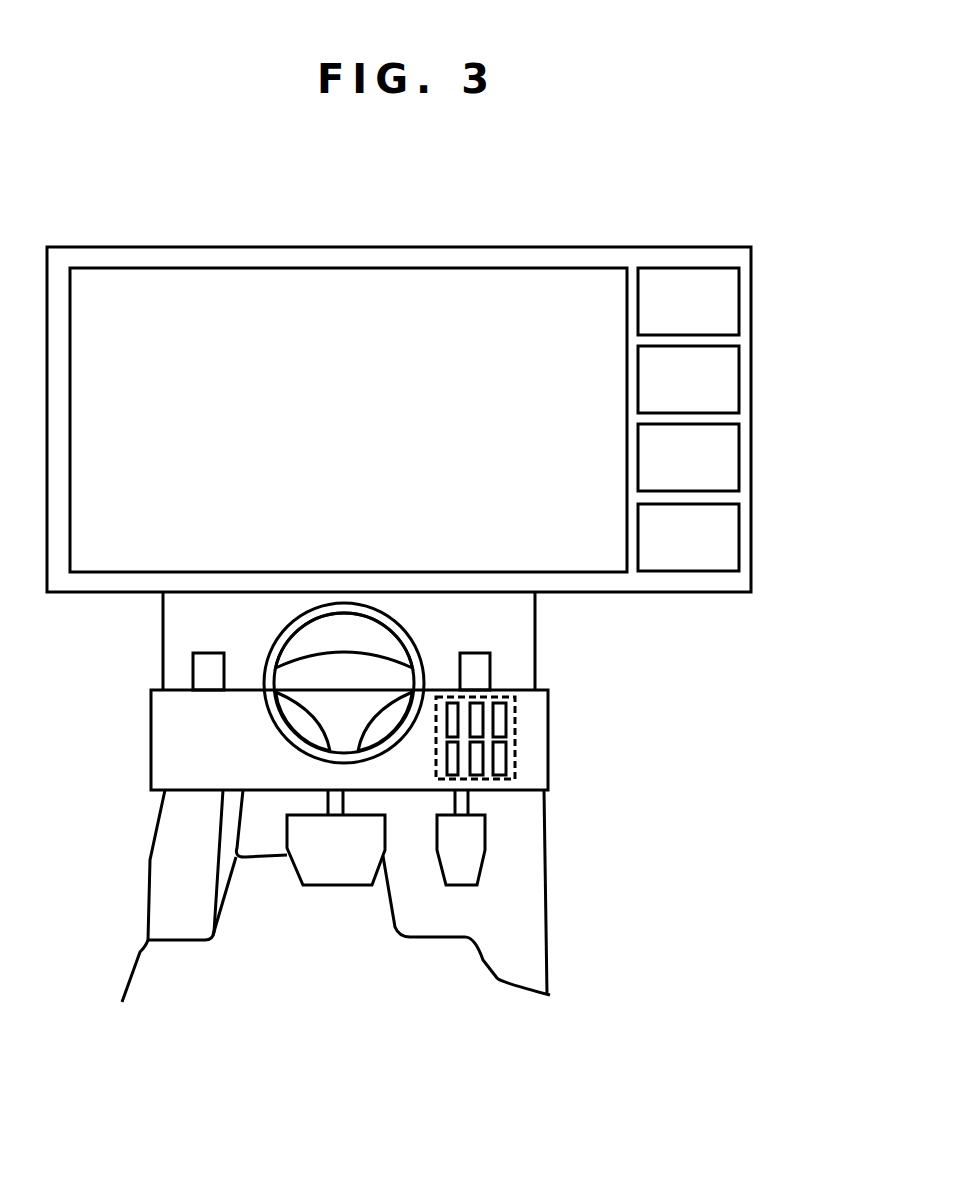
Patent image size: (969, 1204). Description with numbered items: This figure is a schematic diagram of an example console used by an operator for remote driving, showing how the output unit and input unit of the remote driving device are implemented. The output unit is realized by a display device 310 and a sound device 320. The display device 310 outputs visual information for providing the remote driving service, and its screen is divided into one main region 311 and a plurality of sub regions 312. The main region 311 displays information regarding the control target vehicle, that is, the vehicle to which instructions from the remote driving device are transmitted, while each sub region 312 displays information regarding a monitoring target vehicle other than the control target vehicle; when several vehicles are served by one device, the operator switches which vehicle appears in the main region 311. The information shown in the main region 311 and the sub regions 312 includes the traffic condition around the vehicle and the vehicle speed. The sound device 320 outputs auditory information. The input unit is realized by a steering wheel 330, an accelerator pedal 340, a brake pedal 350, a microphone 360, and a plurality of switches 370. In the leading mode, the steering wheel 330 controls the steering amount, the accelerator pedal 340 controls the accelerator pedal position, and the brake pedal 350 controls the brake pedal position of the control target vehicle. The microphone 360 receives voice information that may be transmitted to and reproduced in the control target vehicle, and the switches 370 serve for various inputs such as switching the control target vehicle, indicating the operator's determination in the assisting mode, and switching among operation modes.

The display device 310 is at (408, 247).
The main region 311 is at (235, 268).
The sub region 312 is at (739, 309).
The sound device 320 is at (475, 672).
The steering wheel 330 is at (267, 708).
The accelerator pedal 340 is at (463, 867).
The brake pedal 350 is at (340, 855).
The microphone 360 is at (210, 672).
The switches 370 is at (515, 733).